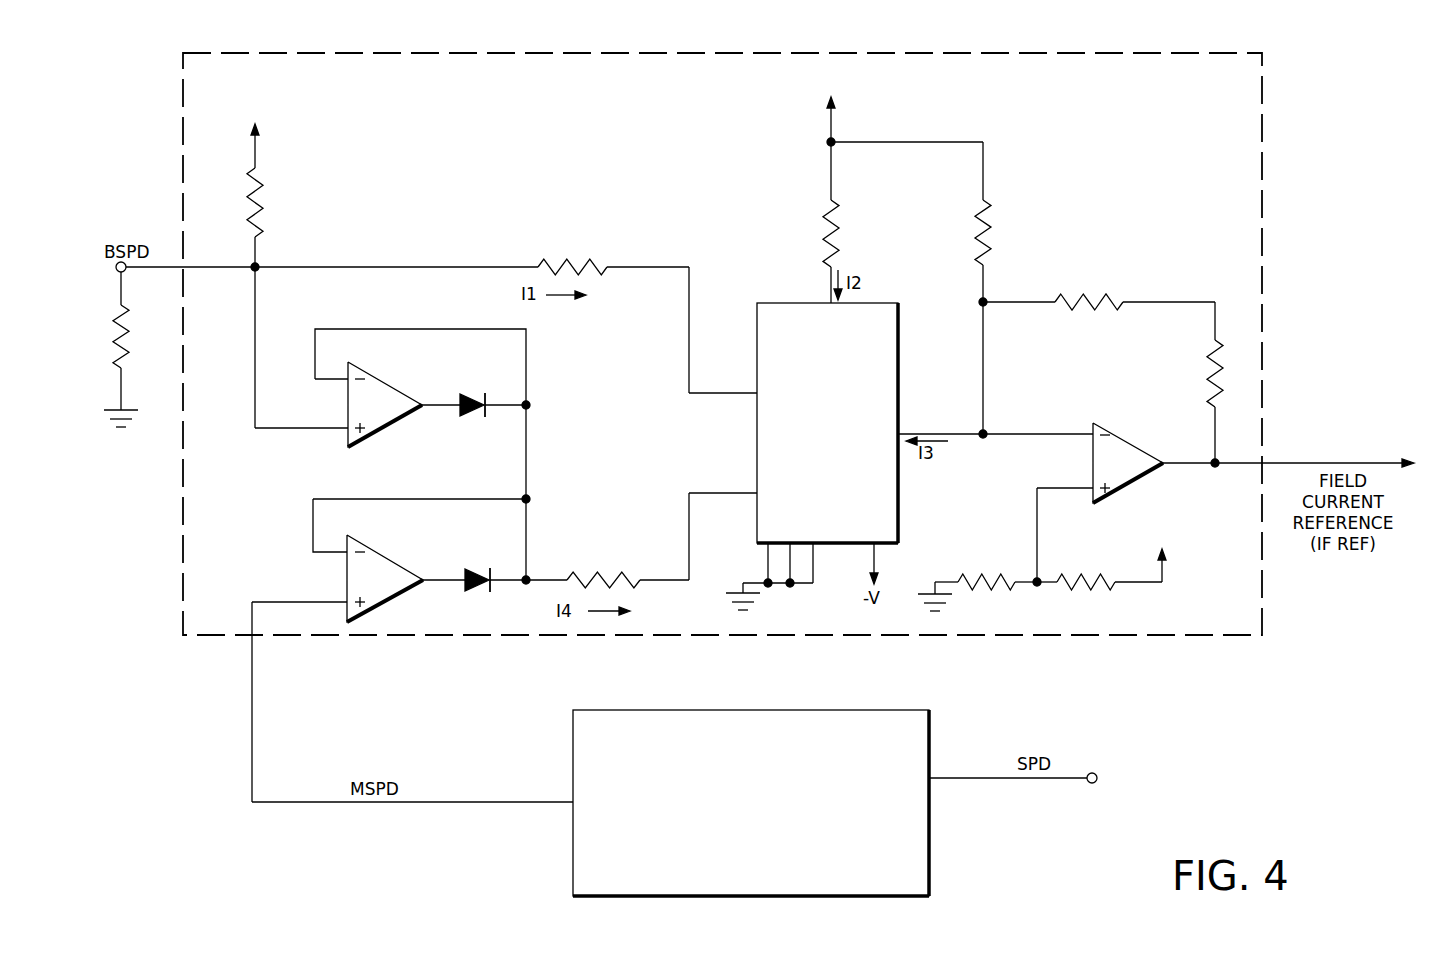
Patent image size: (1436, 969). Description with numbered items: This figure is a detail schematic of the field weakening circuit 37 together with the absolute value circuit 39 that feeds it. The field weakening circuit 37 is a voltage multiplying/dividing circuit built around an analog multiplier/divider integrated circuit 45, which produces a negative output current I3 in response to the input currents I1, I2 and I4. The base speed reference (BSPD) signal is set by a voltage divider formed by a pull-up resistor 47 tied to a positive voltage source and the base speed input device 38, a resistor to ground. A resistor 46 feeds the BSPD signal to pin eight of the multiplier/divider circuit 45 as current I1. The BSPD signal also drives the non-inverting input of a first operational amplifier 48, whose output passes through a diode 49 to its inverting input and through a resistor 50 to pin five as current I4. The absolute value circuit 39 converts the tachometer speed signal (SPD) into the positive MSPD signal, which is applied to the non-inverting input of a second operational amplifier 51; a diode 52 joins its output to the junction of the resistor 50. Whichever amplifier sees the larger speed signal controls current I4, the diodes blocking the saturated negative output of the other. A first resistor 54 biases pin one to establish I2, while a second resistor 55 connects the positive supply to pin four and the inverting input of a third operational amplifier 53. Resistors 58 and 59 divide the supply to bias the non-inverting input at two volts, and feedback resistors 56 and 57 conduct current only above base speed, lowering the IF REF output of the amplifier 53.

The field weakening circuit 37 is at (722, 344).
The base speed input device 38 is at (113, 330).
The absolute value circuit 39 is at (879, 873).
The analog multiplier/divider integrated circuit 45 is at (898, 490).
The resistor 46 is at (589, 262).
The pull-up resistor 47 is at (262, 200).
The first operational amplifier 48 is at (387, 425).
The diode 49 is at (470, 417).
The resistor 50 is at (615, 576).
The second operational amplifier 51 is at (390, 558).
The diode 52 is at (470, 570).
The third operational amplifier 53 is at (1122, 440).
The first resistor 54 is at (836, 233).
The second resistor 55 is at (990, 212).
The resistor 56 is at (1208, 370).
The resistor 57 is at (1102, 297).
The resistor 58 is at (1090, 590).
The resistor 59 is at (990, 590).